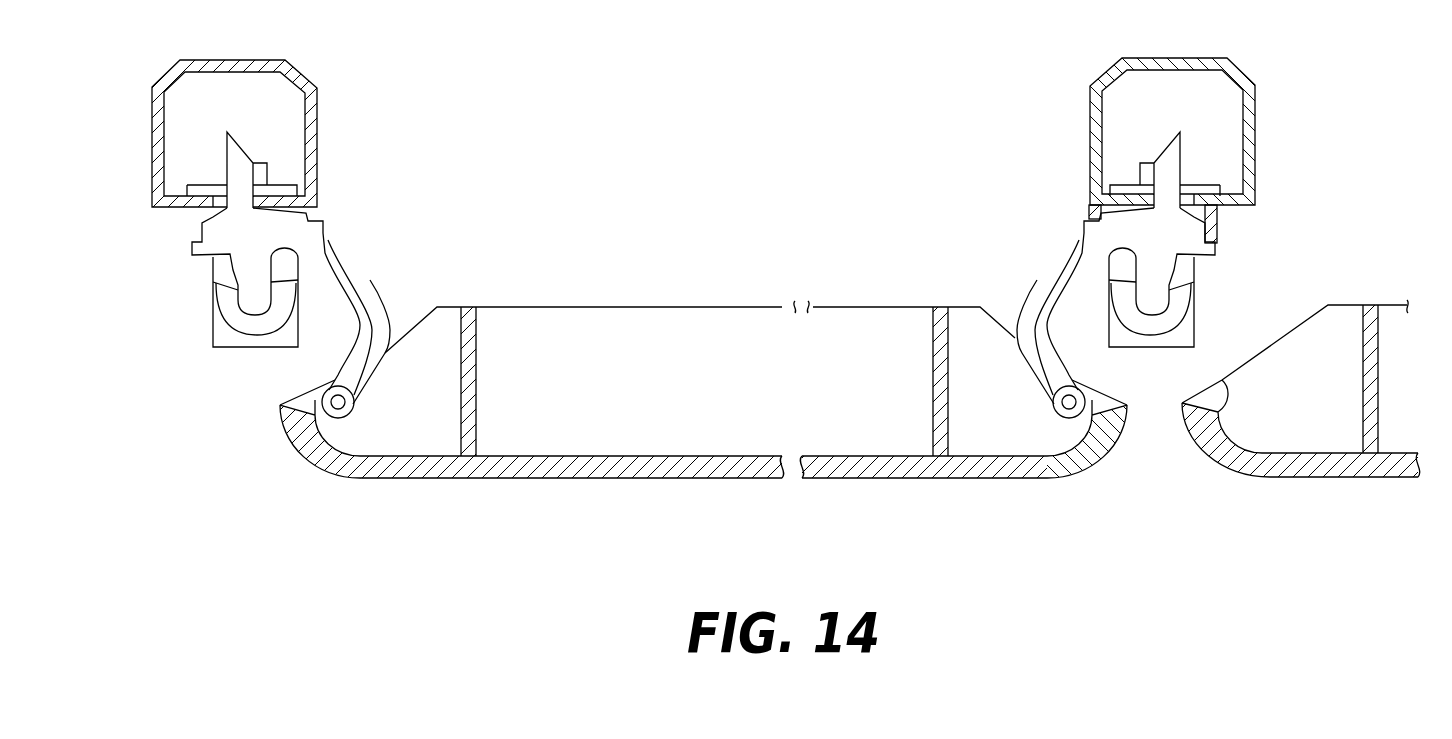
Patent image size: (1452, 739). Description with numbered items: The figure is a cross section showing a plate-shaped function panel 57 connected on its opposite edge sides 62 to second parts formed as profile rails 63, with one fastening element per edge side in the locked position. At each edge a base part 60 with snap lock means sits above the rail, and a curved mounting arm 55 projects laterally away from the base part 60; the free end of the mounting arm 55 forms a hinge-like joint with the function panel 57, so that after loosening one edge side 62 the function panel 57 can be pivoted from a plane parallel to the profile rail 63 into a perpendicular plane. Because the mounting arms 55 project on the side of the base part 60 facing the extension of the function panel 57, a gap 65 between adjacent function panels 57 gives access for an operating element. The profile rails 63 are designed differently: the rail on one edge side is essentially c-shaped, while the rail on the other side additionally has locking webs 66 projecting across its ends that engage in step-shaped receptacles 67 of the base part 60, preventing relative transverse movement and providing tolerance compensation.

The mounting arm 55 is at (370, 280).
The function panel 57 is at (562, 474).
The base part 60 is at (308, 213).
The edge side 62 is at (290, 438).
The profile rail 63 is at (320, 120).
The gap 65 is at (1163, 452).
The locking web 66 is at (1093, 198).
The step-shaped receptacle 67 is at (1066, 218).